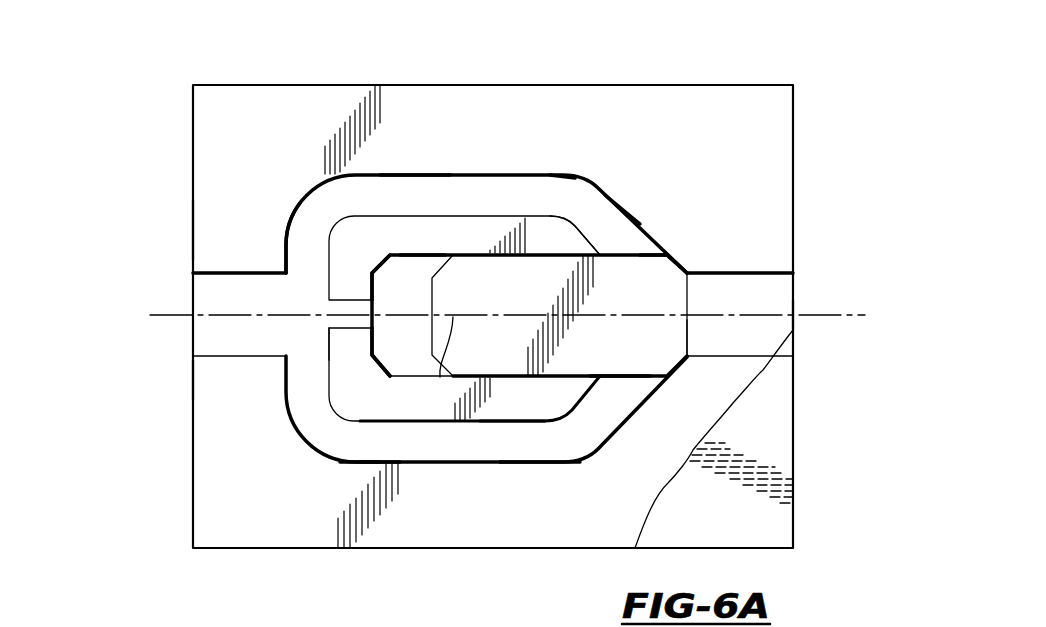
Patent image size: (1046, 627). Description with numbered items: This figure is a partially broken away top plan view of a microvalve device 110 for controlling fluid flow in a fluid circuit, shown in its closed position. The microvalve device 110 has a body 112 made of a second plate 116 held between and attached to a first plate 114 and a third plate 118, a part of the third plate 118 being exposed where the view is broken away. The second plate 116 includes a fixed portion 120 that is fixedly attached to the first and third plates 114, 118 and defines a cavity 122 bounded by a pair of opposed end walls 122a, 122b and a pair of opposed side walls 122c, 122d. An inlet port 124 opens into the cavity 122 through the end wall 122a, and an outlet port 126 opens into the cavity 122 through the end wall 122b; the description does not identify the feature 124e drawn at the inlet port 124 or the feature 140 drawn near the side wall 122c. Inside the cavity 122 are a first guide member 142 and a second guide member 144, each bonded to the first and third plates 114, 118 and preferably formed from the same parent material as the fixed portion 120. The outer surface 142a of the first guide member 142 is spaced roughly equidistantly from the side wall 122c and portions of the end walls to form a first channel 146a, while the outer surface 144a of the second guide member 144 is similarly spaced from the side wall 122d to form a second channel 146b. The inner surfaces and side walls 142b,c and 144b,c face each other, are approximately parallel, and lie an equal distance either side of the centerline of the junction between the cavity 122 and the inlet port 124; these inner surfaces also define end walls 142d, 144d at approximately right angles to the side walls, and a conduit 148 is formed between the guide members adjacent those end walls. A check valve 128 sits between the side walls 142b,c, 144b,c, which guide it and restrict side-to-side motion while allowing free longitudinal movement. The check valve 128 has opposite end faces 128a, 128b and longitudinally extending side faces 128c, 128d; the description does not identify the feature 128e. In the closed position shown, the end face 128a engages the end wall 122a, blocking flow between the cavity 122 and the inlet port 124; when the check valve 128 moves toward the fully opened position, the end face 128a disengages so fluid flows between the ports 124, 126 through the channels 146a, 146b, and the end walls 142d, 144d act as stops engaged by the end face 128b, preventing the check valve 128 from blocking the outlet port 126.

The microvalve device 110 is at (150, 130).
The body 112 is at (806, 172).
The first plate 114 is at (193, 343).
The second plate 116 is at (193, 229).
The third plate 118 is at (787, 463).
The fixed portion 120 is at (475, 98).
The cavity 122 is at (645, 248).
The end wall 122a is at (630, 218).
The end wall 122b is at (288, 252).
The side wall 122c is at (418, 177).
The side wall 122d is at (549, 461).
The inlet port 124 is at (790, 300).
The port axis 124e is at (842, 318).
The outlet port 126 is at (193, 302).
The check valve 128 is at (643, 300).
The end face 128a is at (688, 335).
The end face 128b is at (432, 302).
The side face 128c is at (665, 256).
The side face 128d is at (618, 377).
The slider edge 128e is at (436, 378).
The fluid passage 140 is at (328, 197).
The first guide member 142 is at (398, 247).
The outer surface 142a is at (566, 222).
The inner surface and side wall 142b,c is at (428, 258).
The end wall 142d is at (372, 286).
The second guide member 144 is at (546, 405).
The outer surface 144a is at (513, 423).
The inner surface and side wall 144b,c is at (362, 452).
The end wall 144d is at (390, 373).
The first channel 146a is at (560, 188).
The second channel 146b is at (388, 372).
The conduit 148 is at (338, 323).